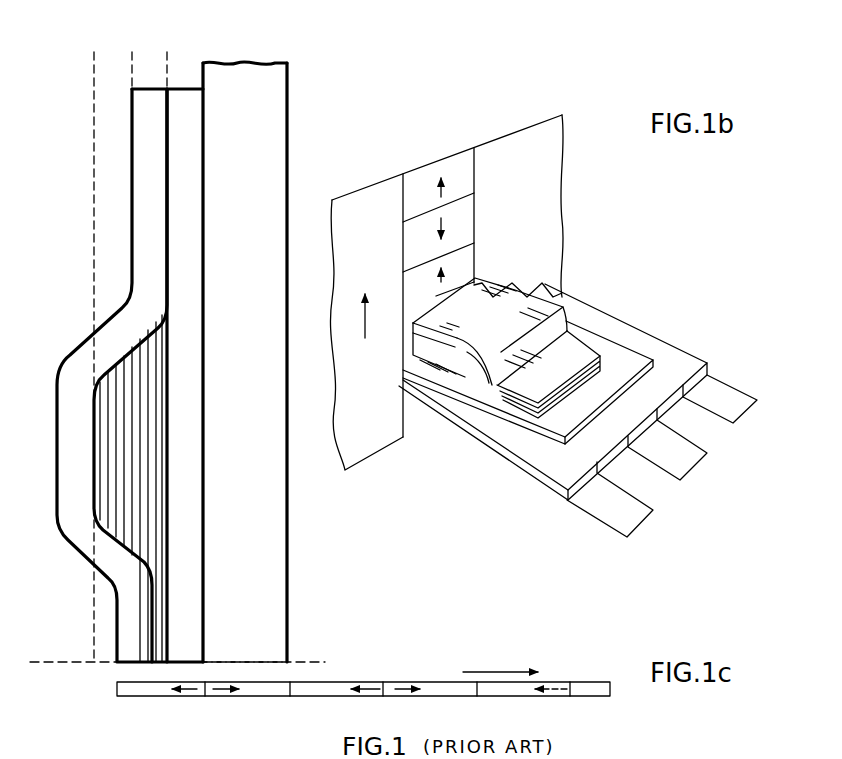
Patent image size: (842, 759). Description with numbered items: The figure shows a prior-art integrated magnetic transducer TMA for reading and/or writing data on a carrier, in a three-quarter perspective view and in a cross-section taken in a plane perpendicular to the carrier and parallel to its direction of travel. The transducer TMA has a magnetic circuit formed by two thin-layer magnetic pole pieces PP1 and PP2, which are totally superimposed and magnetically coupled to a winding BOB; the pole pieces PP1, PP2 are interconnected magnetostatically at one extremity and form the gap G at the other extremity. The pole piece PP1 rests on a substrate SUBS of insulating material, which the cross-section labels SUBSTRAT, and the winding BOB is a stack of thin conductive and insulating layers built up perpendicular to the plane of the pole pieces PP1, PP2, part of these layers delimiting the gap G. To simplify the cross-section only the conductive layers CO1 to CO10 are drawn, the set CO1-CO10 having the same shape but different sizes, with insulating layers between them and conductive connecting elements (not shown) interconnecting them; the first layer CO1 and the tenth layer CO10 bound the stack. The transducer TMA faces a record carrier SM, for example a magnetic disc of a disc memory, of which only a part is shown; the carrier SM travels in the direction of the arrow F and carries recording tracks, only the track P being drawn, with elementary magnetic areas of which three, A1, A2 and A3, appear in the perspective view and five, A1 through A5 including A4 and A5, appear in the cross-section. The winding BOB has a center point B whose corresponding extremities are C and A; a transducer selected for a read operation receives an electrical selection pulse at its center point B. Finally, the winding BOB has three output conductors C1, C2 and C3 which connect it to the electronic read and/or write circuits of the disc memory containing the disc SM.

In FIG. 1C, the winding extremity A is at (93, 345).
In FIG. 1B, the winding extremity A is at (700, 384).
In FIG. 1C, the center point B is at (131, 58).
In FIG. 1B, the center point B is at (645, 439).
In FIG. 1C, the winding extremity C is at (167, 58).
In FIG. 1B, the winding extremity C is at (592, 488).
In FIG. 1C, the substrate SUBSTRAT is at (223, 78).
In FIG. 1C, the substrate SUBS is at (288, 550).
In FIG. 1C, the magnetic pole piece PP1 is at (188, 532).
In FIG. 1B, the magnetic pole piece PP1 is at (612, 347).
In FIG. 1C, the magnetic pole piece PP2 is at (119, 578).
In FIG. 1B, the magnetic pole piece PP2 is at (563, 300).
In FIG. 1C, the conductive layer CO1 is at (164, 394).
In FIG. 1C, the conductive layer CO10 is at (97, 497).
In FIG. 1C, the conductive layers CO1-CO10 is at (138, 443).
In FIG. 1C, the integrated magnetic transducer TMA is at (68, 267).
In FIG. 1C, the record carrier SM is at (363, 702).
In FIG. 1B, the record carrier SM is at (562, 237).
In FIG. 1C, the elementary magnetic area A1 is at (515, 692).
In FIG. 1B, the elementary magnetic area A1 is at (468, 165).
In FIG. 1C, the elementary magnetic area A2 is at (421, 692).
In FIG. 1B, the elementary magnetic area A2 is at (468, 205).
In FIG. 1C, the elementary magnetic area A3 is at (320, 692).
In FIG. 1B, the elementary magnetic area A3 is at (468, 243).
In FIG. 1C, the elementary magnetic area A4 is at (240, 692).
In FIG. 1C, the elementary magnetic area A5 is at (133, 692).
In FIG. 1C, the direction of travel arrow F is at (500, 658).
In FIG. 1B, the direction of travel arrow F is at (357, 324).
In FIG. 1B, the recording track P is at (402, 236).
In FIG. 1B, the gap G is at (412, 338).
In FIG. 1B, the winding BOB is at (469, 385).
In FIG. 1B, the output conductor C1 is at (620, 540).
In FIG. 1B, the output conductor C2 is at (677, 480).
In FIG. 1B, the output conductor C3 is at (732, 425).